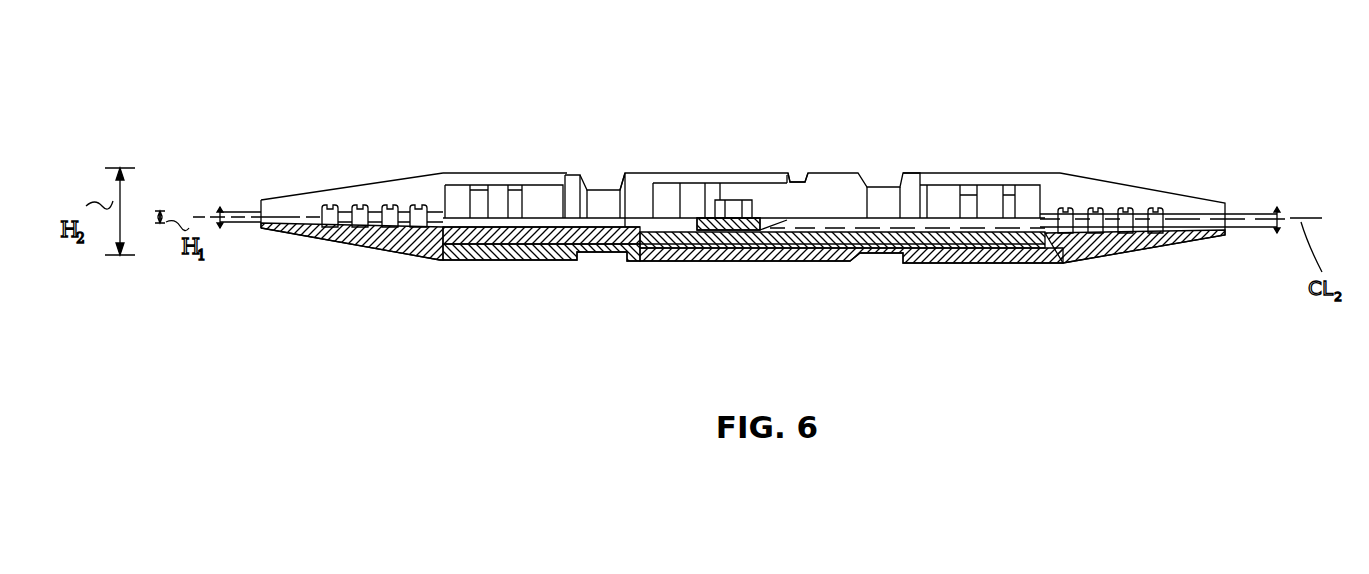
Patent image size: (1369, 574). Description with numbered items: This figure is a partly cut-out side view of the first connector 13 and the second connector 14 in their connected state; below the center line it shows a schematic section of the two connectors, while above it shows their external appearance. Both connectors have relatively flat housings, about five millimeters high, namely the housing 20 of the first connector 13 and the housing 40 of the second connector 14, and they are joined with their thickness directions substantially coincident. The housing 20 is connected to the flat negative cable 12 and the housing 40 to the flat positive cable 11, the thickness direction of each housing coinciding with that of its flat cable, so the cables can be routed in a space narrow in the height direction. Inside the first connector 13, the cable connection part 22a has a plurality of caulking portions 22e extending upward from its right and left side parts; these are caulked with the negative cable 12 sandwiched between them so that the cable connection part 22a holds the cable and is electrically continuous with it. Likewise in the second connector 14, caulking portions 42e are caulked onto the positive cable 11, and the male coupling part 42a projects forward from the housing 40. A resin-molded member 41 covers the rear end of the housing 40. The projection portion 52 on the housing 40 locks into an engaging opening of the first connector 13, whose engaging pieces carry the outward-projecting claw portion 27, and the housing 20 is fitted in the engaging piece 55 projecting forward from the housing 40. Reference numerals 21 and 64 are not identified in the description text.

The positive cable 11 is at (238, 210).
The negative cable 12 is at (1250, 213).
The first connector 13 is at (995, 173).
The second connector 14 is at (537, 174).
The housing 20 is at (848, 178).
The housing right end portion 21 is at (1057, 172).
The cable connection part 22a is at (833, 268).
The caulking portions 22e is at (1155, 208).
The claw portion 27 is at (717, 187).
The housing 40 is at (623, 175).
The resin-molded member 41 is at (436, 175).
The male coupling part 42a is at (726, 264).
The caulking portions 42e is at (418, 205).
The projection portion 52 is at (737, 207).
The engaging piece 55 is at (782, 264).
The cover notch 64 is at (788, 178).